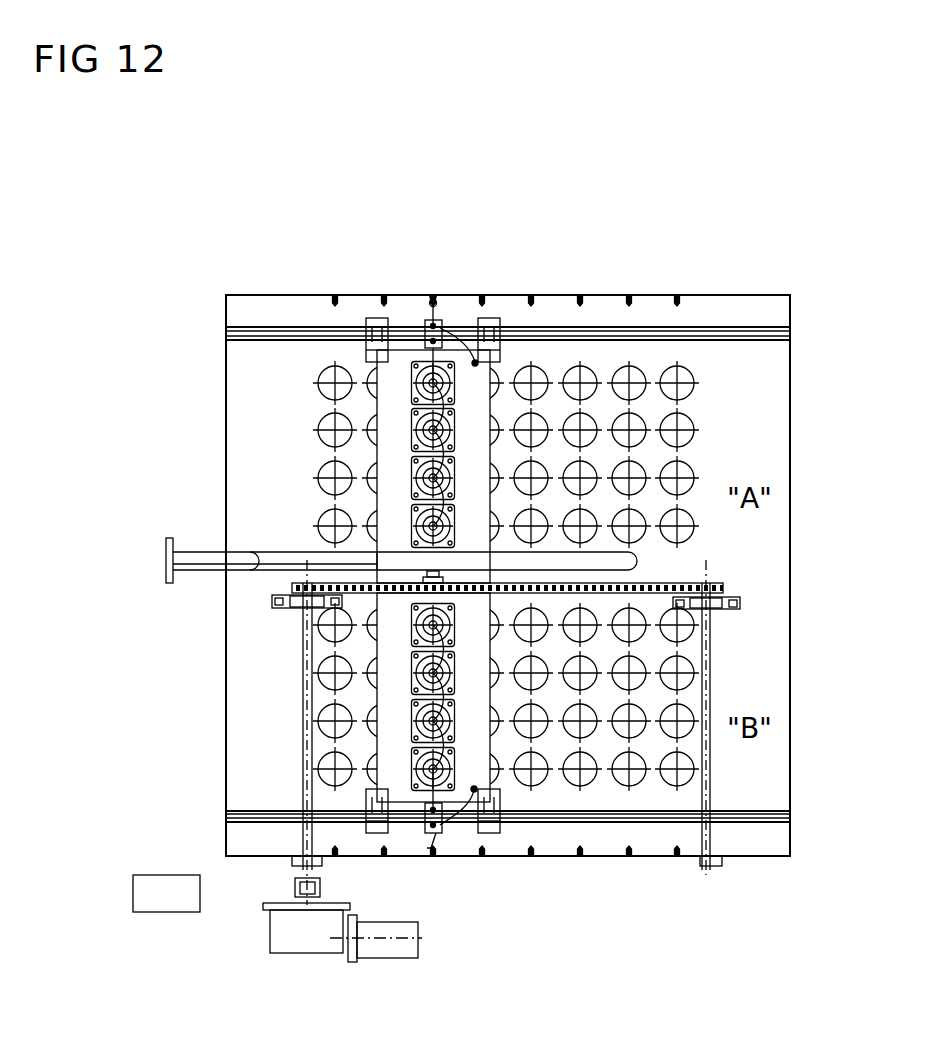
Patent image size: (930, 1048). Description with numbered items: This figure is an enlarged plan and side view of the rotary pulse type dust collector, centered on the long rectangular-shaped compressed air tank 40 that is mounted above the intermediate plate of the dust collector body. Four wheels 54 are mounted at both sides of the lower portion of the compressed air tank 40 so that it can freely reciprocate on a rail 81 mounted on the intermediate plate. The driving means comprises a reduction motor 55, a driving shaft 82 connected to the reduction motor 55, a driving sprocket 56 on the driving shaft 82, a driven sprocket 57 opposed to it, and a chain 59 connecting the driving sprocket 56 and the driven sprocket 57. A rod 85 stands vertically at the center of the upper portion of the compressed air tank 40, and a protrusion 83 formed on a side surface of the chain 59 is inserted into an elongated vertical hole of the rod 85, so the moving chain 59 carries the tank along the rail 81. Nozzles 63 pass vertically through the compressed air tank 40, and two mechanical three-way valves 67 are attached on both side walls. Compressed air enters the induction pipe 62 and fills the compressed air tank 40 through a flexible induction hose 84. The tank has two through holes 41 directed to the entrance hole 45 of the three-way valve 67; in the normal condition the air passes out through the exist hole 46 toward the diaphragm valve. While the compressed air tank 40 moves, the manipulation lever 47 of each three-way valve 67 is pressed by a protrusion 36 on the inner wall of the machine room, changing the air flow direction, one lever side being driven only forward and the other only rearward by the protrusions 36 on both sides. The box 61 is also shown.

The protrusion 36 is at (581, 295).
The compressed air tank 40 is at (383, 645).
The through hole 41 is at (478, 363).
The entrance hole 45 is at (426, 322).
The exist hole 46 is at (374, 320).
The manipulation lever 47 is at (437, 298).
The wheel 54 is at (492, 835).
The reduction motor 55 is at (302, 935).
The driving sprocket 56 is at (290, 583).
The driven sprocket 57 is at (722, 585).
The chain 59 is at (686, 583).
The controller box 61 is at (163, 890).
The induction pipe 62 is at (205, 574).
The nozzle 63 is at (697, 430).
The mechanical 3-way valve 67 is at (436, 834).
The rail 81 is at (228, 333).
The driving shaft 82 is at (305, 733).
The protrusion 83 is at (428, 573).
The flexible induction hose 84 is at (293, 552).
The rod 85 is at (375, 560).